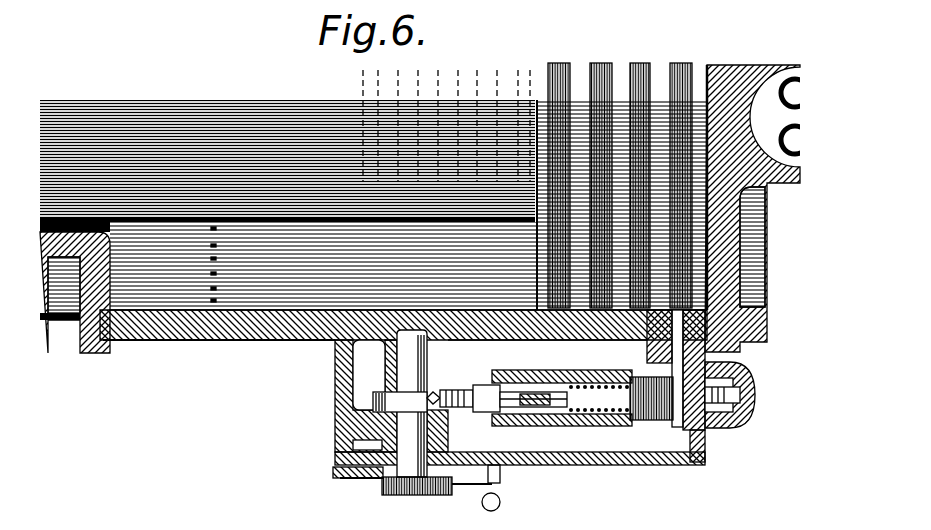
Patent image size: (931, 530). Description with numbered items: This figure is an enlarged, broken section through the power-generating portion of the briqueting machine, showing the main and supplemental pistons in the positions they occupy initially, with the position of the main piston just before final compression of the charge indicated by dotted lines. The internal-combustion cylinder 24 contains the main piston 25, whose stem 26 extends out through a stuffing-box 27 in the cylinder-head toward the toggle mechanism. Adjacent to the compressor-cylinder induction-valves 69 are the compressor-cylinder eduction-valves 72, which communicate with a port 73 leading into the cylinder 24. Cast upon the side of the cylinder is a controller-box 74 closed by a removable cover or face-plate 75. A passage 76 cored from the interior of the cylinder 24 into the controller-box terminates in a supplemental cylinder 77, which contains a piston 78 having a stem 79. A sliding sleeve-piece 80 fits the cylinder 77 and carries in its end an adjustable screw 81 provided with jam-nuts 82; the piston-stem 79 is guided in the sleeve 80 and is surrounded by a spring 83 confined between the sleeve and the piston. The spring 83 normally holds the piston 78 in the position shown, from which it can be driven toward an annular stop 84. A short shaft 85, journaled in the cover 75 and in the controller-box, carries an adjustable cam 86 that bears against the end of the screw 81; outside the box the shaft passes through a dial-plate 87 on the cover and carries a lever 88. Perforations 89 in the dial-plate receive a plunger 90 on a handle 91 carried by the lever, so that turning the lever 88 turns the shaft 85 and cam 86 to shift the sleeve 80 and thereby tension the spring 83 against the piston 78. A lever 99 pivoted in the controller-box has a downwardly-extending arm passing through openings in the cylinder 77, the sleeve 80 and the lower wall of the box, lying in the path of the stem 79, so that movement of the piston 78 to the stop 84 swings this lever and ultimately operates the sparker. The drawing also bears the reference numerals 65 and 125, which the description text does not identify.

The internal-combustion cylinder 24 is at (267, 341).
The main piston 25 is at (477, 80).
The piston stem 26 is at (268, 108).
The stuffing-box 27 is at (92, 238).
The passage 65 is at (781, 133).
The induction-valves 69 is at (790, 178).
The compressor-cylinder eduction-valves 72 is at (790, 76).
The port 73 is at (722, 76).
The controller-box 74 is at (335, 415).
The removable cover 75 is at (555, 456).
The passage 76 is at (680, 343).
The supplemental cylinder 77 is at (545, 379).
The piston 78 is at (640, 430).
The piston-stem 79 is at (570, 411).
The sliding sleeve-piece 80 is at (514, 385).
The adjustable screw 81 is at (458, 408).
The jam-nuts 82 is at (476, 390).
The spring 83 is at (587, 388).
The annular stop 84 is at (638, 416).
The short shaft 85 is at (407, 359).
The adjustable cam 86 is at (393, 397).
The dial-plate 87 is at (356, 479).
The lever 88 is at (455, 488).
The perforations 89 is at (335, 473).
The plunger 90 is at (500, 486).
The handle 91 is at (497, 508).
The lever 99 is at (542, 407).
The apertures 125 is at (200, 301).